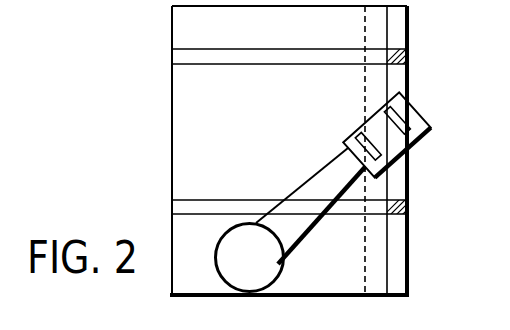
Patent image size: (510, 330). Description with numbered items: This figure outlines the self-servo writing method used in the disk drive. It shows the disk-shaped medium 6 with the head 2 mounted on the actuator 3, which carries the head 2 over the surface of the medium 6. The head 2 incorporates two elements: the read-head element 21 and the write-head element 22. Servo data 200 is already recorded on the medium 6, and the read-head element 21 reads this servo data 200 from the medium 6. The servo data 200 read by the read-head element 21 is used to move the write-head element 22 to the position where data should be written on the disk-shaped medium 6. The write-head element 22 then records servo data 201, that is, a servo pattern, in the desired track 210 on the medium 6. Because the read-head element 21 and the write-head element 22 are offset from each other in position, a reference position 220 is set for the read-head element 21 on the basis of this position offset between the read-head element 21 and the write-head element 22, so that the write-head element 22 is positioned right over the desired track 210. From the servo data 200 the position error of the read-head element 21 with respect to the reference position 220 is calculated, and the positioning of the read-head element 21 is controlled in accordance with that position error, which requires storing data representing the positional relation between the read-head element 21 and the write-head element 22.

The disk-shaped medium 6 is at (292, 149).
The servo data 200 is at (170, 63).
The servo data (servo pattern) 201 is at (408, 54).
The desired track 210 is at (408, 19).
The reference position 220 is at (365, 22).
The head 2 is at (405, 134).
The write-head element 22 is at (410, 124).
The read-head element 21 is at (390, 166).
The actuator 3 is at (339, 220).